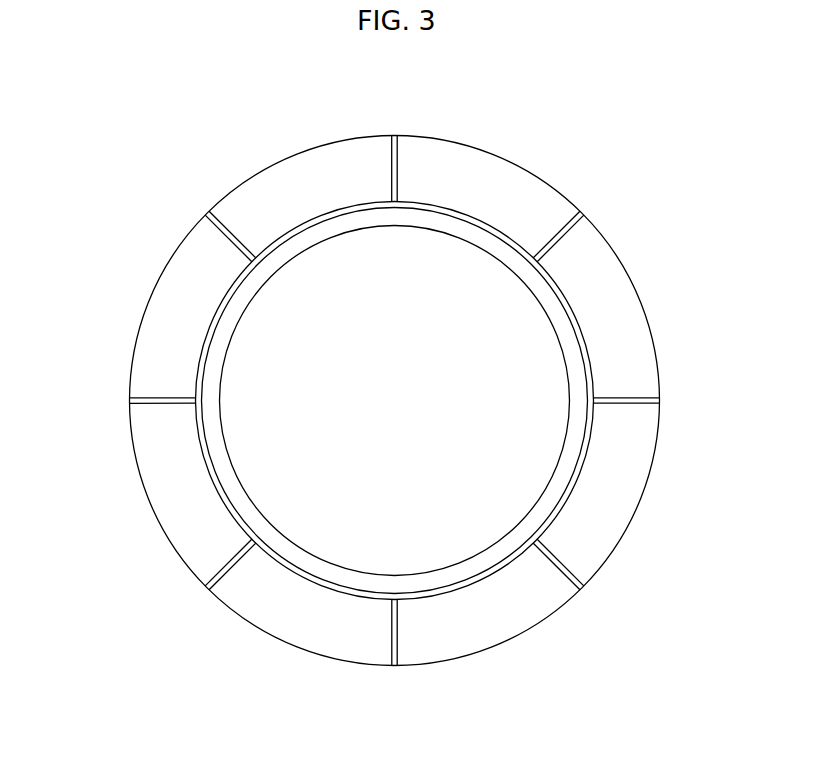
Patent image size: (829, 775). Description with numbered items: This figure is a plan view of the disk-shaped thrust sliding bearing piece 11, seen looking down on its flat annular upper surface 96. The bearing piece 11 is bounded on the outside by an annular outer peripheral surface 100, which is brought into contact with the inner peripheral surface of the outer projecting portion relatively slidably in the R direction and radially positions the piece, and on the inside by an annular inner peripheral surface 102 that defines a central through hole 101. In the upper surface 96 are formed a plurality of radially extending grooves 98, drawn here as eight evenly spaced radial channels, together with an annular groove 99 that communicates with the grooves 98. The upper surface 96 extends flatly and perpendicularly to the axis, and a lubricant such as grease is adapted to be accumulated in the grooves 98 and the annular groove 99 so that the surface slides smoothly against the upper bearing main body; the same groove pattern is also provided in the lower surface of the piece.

The thrust sliding bearing piece 11 is at (391, 398).
The upper surface 96 is at (480, 628).
The radially extending grooves 98 is at (395, 168).
The annular groove 99 is at (498, 568).
The annular outer peripheral surface 100 is at (648, 324).
The central through hole 101 is at (413, 420).
The annular inner peripheral surface 102 is at (228, 456).